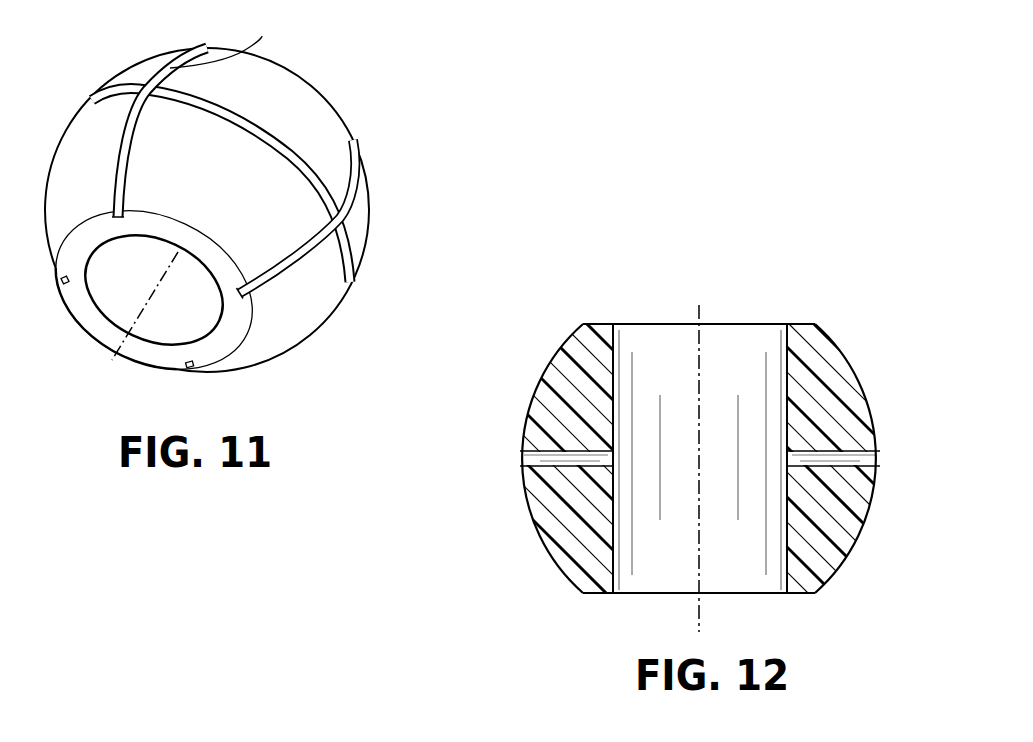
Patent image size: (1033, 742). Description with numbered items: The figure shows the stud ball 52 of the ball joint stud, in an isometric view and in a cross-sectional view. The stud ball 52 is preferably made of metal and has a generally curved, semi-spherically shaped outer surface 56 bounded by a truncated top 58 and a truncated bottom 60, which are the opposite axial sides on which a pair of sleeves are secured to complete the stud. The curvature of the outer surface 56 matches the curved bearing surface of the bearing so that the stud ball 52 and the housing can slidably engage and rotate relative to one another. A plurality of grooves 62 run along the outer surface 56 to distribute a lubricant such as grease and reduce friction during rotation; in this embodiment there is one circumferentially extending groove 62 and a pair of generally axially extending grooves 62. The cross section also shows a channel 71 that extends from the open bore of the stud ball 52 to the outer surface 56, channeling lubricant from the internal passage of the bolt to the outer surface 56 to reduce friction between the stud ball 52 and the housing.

In FIG. 11, the stud ball 52 is at (257, 221).
In FIG. 12, the stud ball 52 is at (640, 443).
In FIG. 11, the outer surface 56 is at (300, 98).
In FIG. 12, the outer surface 56 is at (522, 478).
In FIG. 11, the truncated top 58 is at (217, 347).
In FIG. 12, the truncated top 58 is at (798, 324).
In FIG. 12, the truncated bottom 60 is at (608, 593).
In FIG. 11, the grooves 62 is at (237, 117).
In FIG. 12, the channel 71 is at (520, 458).